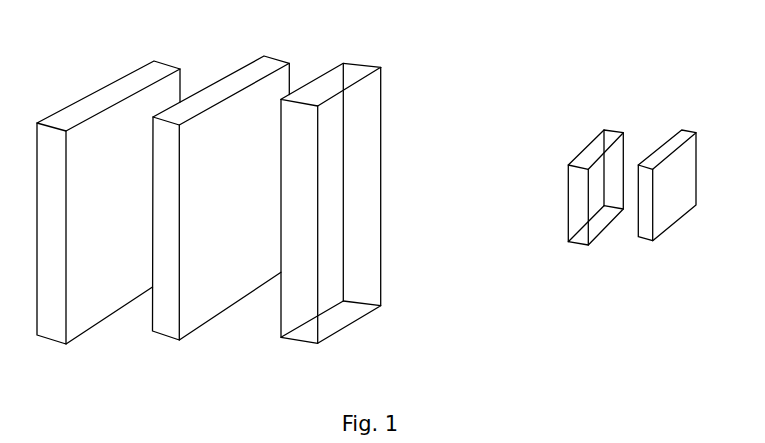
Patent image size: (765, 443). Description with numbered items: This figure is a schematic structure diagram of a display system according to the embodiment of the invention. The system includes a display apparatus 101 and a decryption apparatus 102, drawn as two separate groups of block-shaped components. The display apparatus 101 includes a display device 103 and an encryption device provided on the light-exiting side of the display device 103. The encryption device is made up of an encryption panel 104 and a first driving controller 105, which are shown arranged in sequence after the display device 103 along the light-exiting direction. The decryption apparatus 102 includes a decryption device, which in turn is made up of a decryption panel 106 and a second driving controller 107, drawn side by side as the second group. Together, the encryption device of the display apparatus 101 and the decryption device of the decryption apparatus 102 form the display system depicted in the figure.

The display apparatus 101 is at (209, 199).
The decryption apparatus 102 is at (632, 185).
The display device 103 is at (86, 103).
The encryption panel 104 is at (250, 75).
The first driving controller 105 is at (331, 82).
The decryption panel 106 is at (598, 165).
The second driving controller 107 is at (682, 158).